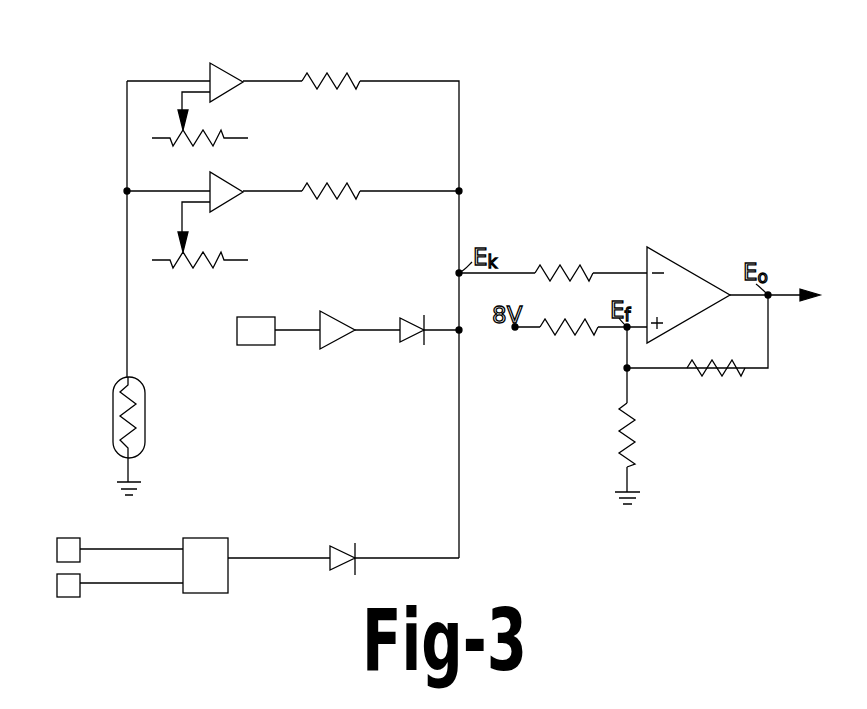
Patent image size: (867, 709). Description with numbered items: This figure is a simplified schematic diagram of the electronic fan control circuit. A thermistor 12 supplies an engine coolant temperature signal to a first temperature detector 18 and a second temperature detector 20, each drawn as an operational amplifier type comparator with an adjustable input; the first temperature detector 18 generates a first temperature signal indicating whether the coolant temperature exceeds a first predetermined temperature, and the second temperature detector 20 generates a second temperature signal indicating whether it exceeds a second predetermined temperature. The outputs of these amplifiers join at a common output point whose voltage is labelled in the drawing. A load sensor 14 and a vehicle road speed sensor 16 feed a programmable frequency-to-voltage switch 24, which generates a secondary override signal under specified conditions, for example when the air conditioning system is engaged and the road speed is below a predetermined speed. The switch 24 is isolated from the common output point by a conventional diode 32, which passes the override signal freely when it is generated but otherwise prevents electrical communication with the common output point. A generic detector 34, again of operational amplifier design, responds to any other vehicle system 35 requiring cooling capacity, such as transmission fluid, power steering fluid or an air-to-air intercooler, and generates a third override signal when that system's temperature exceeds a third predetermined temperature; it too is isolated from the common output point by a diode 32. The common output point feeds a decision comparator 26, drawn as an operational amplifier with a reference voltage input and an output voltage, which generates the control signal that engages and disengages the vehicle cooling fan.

The thermistor 12 is at (112, 425).
The load sensor 14 is at (72, 548).
The vehicle road speed sensor 16 is at (70, 597).
The first temperature detector 18 is at (232, 77).
The second temperature detector 20 is at (231, 201).
The programmable frequency-to-voltage switch 24 is at (205, 565).
The decision comparator 26 is at (670, 290).
The diode 32 is at (400, 320).
The generic detector 34 is at (336, 340).
The vehicle system 35 is at (248, 332).